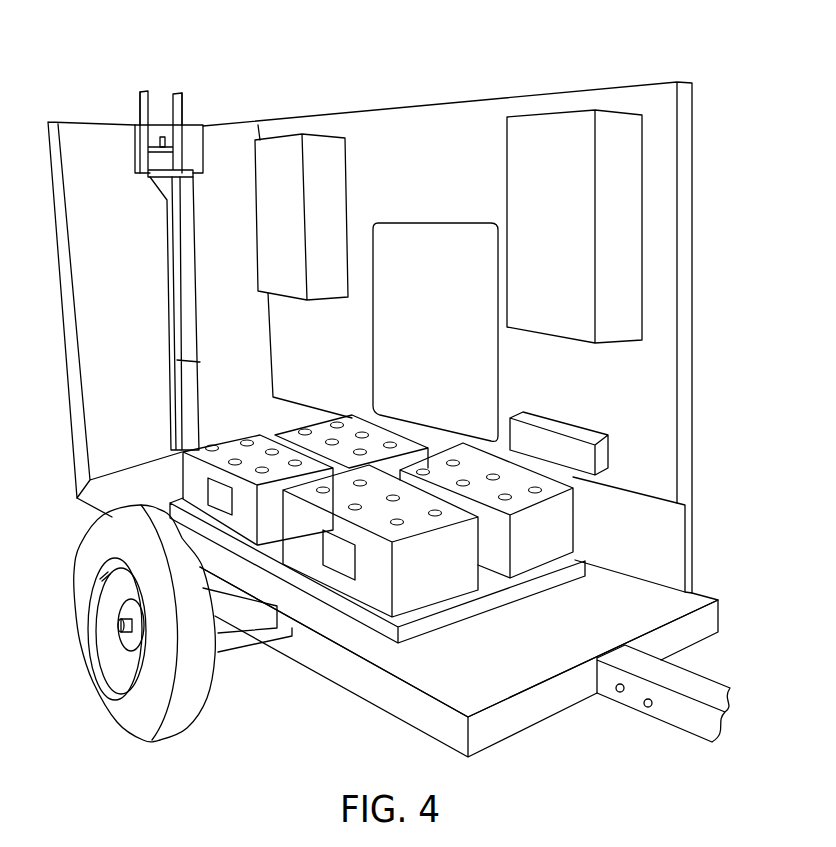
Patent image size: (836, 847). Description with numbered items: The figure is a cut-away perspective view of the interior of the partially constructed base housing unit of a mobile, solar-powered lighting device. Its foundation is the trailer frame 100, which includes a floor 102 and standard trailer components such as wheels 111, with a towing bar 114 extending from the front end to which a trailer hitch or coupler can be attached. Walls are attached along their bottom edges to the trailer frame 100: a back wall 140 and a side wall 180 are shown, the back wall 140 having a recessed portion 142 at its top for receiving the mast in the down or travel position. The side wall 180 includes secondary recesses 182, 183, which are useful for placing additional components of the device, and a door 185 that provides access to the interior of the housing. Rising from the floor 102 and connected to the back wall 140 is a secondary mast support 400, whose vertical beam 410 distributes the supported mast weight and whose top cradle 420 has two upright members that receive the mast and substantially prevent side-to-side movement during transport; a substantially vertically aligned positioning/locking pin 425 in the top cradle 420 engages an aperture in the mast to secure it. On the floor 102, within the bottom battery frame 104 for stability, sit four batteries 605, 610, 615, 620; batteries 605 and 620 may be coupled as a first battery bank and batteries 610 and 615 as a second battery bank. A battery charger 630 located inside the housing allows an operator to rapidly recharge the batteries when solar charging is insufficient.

The trailer frame 100 is at (397, 710).
The floor 102 is at (544, 631).
The battery bank base stabilizing frame 104 is at (461, 626).
The wheels 111 is at (98, 677).
The towing bar 114 is at (687, 671).
The back wall 140 is at (104, 299).
The recessed portion 142 is at (189, 144).
The side wall 180 is at (568, 397).
The secondary recess 182 is at (532, 229).
The secondary recess 183 is at (327, 173).
The door 185 is at (415, 327).
The secondary mast support 400 is at (133, 64).
The vertical beam 410 is at (173, 321).
The top cradle 420 is at (159, 106).
The positioning/locking pin 425 is at (160, 136).
The battery 605 is at (296, 428).
The battery 610 is at (243, 521).
The battery 615 is at (363, 587).
The battery 620 is at (577, 515).
The battery charger 630 is at (603, 458).